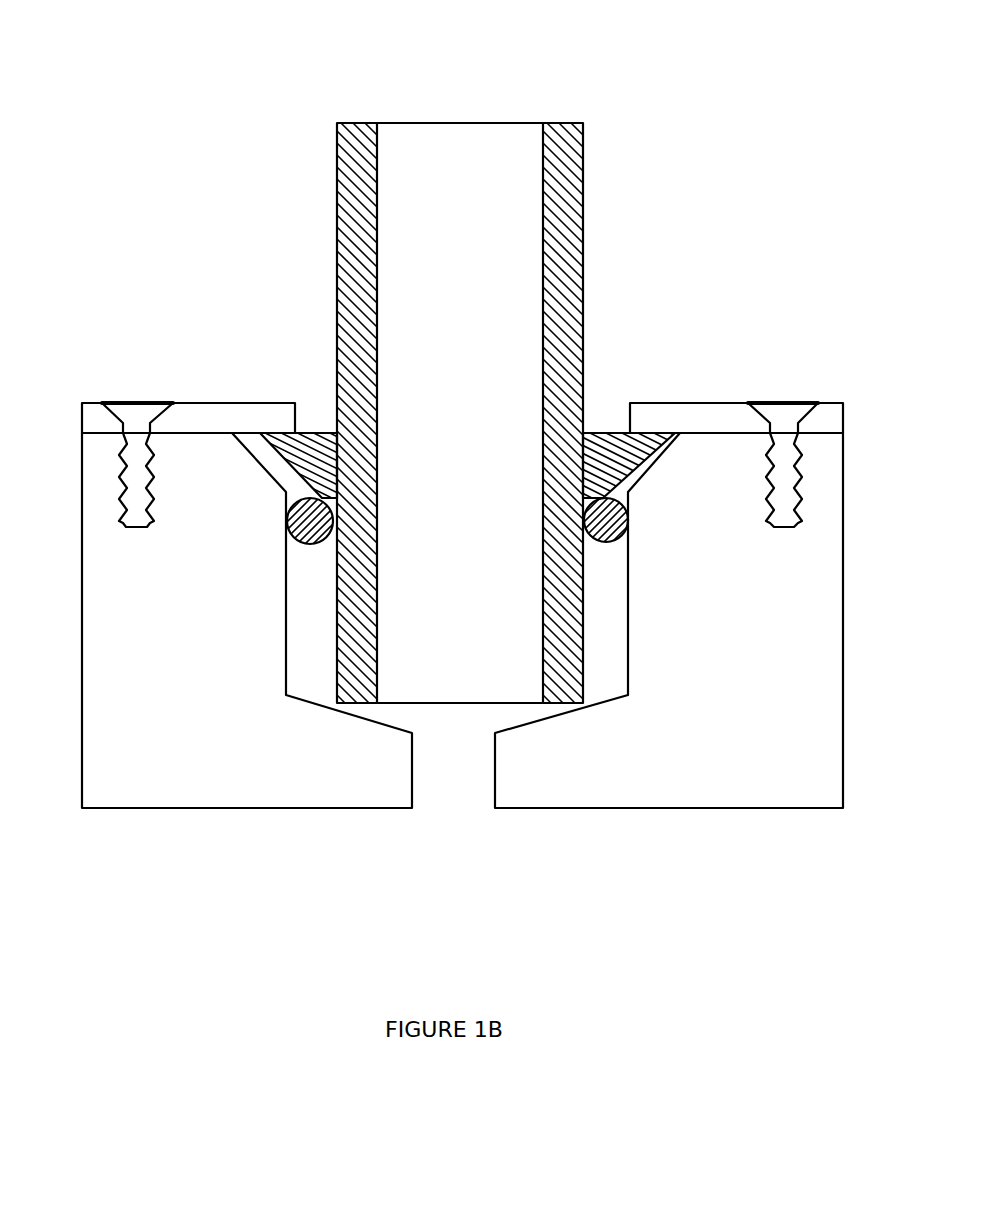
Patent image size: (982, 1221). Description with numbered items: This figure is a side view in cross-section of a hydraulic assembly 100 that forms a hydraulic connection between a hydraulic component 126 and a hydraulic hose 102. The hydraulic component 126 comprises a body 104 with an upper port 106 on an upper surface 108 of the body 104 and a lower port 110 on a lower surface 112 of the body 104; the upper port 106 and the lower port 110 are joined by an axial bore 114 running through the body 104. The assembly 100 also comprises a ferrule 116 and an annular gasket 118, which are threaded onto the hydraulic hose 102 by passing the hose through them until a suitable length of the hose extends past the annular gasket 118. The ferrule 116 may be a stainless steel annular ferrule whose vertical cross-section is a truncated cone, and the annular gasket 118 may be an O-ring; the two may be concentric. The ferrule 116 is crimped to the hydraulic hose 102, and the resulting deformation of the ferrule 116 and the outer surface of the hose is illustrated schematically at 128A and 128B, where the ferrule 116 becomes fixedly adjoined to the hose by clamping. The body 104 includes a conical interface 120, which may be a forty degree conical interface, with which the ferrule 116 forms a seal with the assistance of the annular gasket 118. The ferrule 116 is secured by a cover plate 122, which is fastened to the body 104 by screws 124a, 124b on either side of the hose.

The hydraulic assembly 100 is at (156, 110).
The hydraulic hose 102 is at (335, 193).
The body 104 is at (86, 568).
The upper port 106 is at (467, 385).
The upper surface 108 is at (850, 433).
The lower port 110 is at (455, 799).
The lower surface 112 is at (850, 805).
The axial bore 114 is at (459, 565).
The ferrule 116 is at (318, 433).
The annular gasket 118 is at (612, 433).
The conical interface 120 is at (671, 428).
The cover plate 122 is at (82, 418).
The screw 124a is at (137, 402).
The screw 124b is at (786, 408).
The hydraulic component 126 is at (68, 357).
The deforming 128A is at (358, 470).
The deforming 128B is at (563, 443).